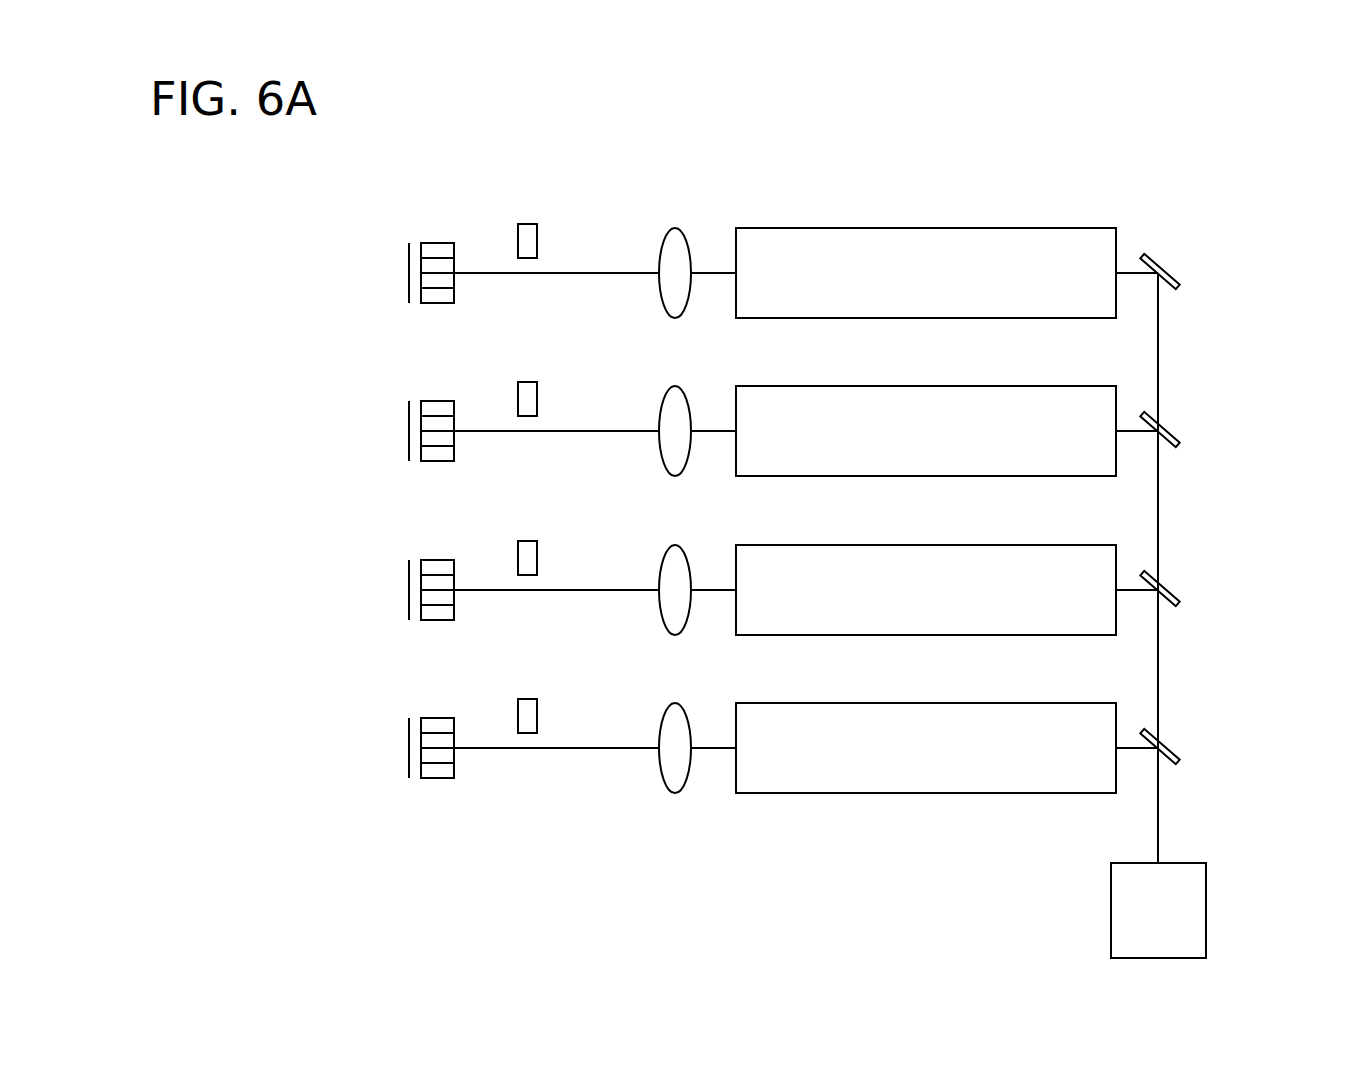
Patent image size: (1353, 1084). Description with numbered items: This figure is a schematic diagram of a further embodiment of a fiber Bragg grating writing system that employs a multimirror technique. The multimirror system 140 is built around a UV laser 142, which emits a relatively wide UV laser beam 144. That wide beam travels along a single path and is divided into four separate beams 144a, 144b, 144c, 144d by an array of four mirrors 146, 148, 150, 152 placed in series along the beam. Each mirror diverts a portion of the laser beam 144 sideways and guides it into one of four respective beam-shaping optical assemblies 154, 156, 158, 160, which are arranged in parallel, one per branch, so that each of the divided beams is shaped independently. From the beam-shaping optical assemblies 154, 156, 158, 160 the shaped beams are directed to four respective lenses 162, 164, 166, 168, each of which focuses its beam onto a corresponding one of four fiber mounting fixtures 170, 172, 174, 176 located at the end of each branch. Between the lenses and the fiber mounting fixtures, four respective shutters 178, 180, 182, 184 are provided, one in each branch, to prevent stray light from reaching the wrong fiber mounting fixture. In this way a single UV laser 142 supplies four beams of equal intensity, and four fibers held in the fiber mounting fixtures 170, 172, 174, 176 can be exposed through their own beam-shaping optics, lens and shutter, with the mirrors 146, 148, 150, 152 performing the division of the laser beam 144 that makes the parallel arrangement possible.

The multimirror system 140 is at (822, 136).
The UV laser 142 is at (1207, 905).
The UV laser beam 144 is at (1160, 823).
The first separate beam 144a is at (1136, 750).
The second separate beam 144b is at (1136, 592).
The third separate beam 144c is at (1136, 433).
The fourth separate beam 144d is at (1136, 275).
The mirror 146 is at (1173, 750).
The mirror 148 is at (1173, 592).
The mirror 150 is at (1173, 433).
The mirror 152 is at (1173, 275).
The beam-shaping optical assembly 154 is at (805, 793).
The beam-shaping optical assembly 156 is at (948, 545).
The beam-shaping optical assembly 158 is at (920, 386).
The beam-shaping optical assembly 160 is at (989, 228).
The lens 162 is at (663, 713).
The lens 164 is at (662, 563).
The lens 166 is at (663, 393).
The lens 168 is at (673, 227).
The fiber mounting fixture 170 is at (437, 718).
The fiber mounting fixture 172 is at (437, 560).
The fiber mounting fixture 174 is at (437, 401).
The fiber mounting fixture 176 is at (437, 243).
The shutter 178 is at (517, 716).
The shutter 180 is at (517, 558).
The shutter 182 is at (517, 399).
The shutter 184 is at (517, 241).